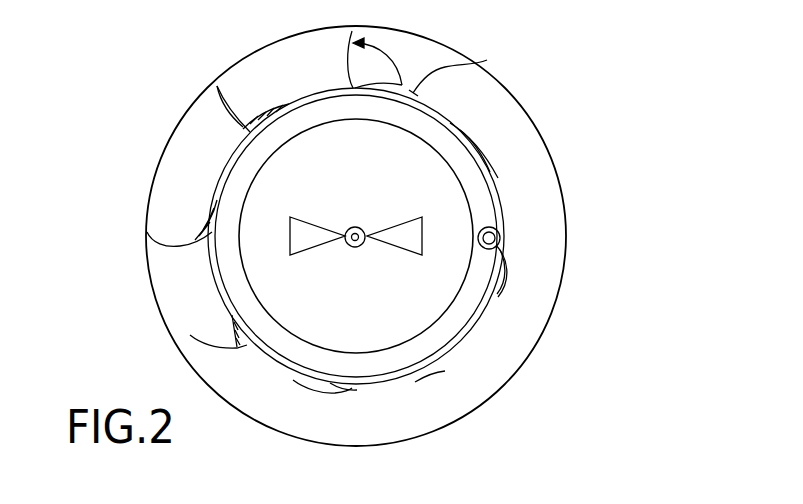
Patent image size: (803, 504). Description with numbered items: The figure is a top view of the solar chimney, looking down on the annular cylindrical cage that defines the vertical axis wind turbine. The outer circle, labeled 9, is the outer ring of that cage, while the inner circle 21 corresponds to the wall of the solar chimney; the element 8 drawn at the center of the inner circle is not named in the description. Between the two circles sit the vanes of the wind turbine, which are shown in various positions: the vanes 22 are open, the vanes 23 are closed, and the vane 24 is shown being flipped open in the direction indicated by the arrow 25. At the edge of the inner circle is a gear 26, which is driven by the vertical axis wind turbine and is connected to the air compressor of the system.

The fan 8 is at (310, 243).
The housing 9 is at (565, 240).
The inner circle 21 is at (397, 127).
The vanes 22 is at (223, 103).
The vanes 23 is at (500, 292).
The vane 24 is at (487, 60).
The arrow 25 is at (395, 62).
The gear 26 is at (487, 226).